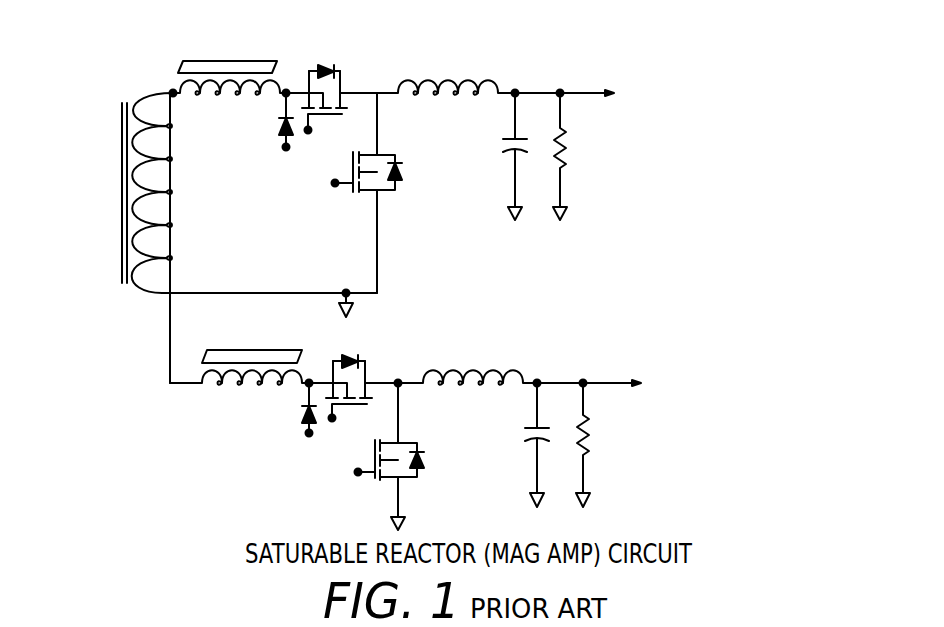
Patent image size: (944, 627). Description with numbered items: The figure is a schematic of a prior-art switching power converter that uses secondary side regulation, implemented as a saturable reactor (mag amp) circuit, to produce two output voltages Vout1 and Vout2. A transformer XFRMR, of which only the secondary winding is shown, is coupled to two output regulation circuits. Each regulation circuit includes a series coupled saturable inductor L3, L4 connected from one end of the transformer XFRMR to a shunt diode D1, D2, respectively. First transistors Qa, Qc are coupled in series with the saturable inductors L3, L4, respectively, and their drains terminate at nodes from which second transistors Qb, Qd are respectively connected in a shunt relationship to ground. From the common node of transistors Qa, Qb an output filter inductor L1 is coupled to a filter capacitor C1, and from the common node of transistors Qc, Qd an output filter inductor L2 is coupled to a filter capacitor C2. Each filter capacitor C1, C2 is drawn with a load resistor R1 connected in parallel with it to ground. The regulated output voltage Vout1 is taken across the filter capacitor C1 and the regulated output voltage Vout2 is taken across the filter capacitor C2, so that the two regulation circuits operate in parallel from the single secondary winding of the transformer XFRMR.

The transformer XFRMR is at (105, 193).
The saturable inductor L3 is at (229, 97).
The saturable inductor L4 is at (239, 387).
The output filter inductor L1 is at (446, 70).
The output filter inductor L2 is at (467, 360).
The filter capacitor C1 is at (496, 155).
The filter capacitor C2 is at (518, 444).
The load resistor R1 is at (569, 299).
The shunt diode D1 is at (270, 137).
The shunt diode D2 is at (293, 417).
The first transistor Qa is at (340, 63).
The second transistor Qb is at (352, 196).
The first transistor Qc is at (355, 361).
The second transistor Qd is at (368, 487).
The output voltage Vout1 is at (627, 91).
The output voltage Vout2 is at (654, 382).